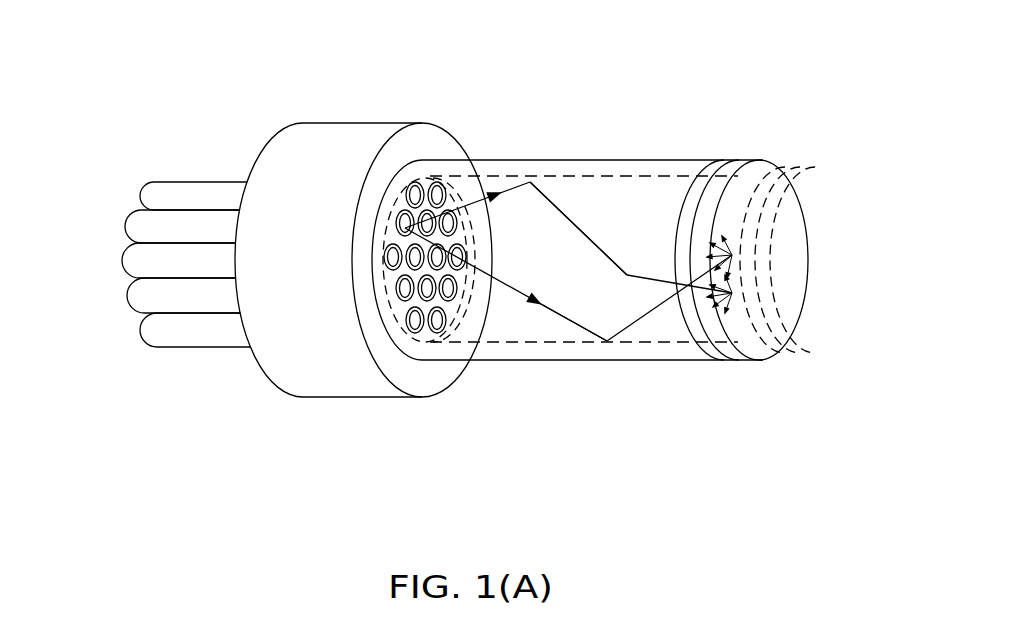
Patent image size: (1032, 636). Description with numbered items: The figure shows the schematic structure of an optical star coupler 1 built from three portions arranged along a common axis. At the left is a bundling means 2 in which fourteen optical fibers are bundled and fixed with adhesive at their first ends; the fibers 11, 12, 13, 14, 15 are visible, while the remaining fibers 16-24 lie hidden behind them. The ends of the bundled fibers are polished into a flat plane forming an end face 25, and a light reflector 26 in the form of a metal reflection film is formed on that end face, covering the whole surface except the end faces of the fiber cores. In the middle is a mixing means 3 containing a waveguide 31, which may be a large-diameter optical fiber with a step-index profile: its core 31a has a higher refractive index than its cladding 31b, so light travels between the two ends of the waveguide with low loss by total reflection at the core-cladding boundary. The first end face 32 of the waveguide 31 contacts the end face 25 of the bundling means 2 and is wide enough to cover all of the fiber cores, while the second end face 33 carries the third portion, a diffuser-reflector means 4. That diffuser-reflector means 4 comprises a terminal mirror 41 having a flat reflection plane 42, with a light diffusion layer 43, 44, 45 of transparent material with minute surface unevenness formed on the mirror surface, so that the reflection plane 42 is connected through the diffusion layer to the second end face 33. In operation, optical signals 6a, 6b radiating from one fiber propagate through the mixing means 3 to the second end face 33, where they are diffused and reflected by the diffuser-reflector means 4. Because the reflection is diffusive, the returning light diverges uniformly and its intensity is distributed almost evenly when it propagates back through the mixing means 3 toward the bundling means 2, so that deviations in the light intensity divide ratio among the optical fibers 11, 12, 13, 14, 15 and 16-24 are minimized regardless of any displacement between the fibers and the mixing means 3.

The optical connector 1 is at (147, 60).
The bundling means 2 is at (413, 468).
The mixing means 3 is at (717, 468).
The diffuser-reflector means 4 is at (773, 306).
The optical fiber 11 is at (147, 195).
The optical fiber 12 is at (135, 228).
The optical fiber 13 is at (130, 263).
The optical fiber 14 is at (138, 293).
The optical fiber 15 is at (152, 327).
The optical fibers 16-24 is at (212, 352).
The end face 25 is at (400, 203).
The light reflector 26 is at (452, 190).
The first end face 32 is at (460, 187).
The second end face 33 is at (681, 191).
The optical signal 6a is at (505, 194).
The optical signal 6b is at (494, 281).
The waveguide 31 is at (585, 313).
The core 31a is at (545, 322).
The cladding 31b is at (513, 342).
The terminal mirror 41 is at (782, 338).
The reflection plane 42 is at (782, 310).
The light diffusion layer 43 is at (775, 207).
The light diffusion layer 44 is at (777, 260).
The light diffusion layer 45 is at (792, 260).